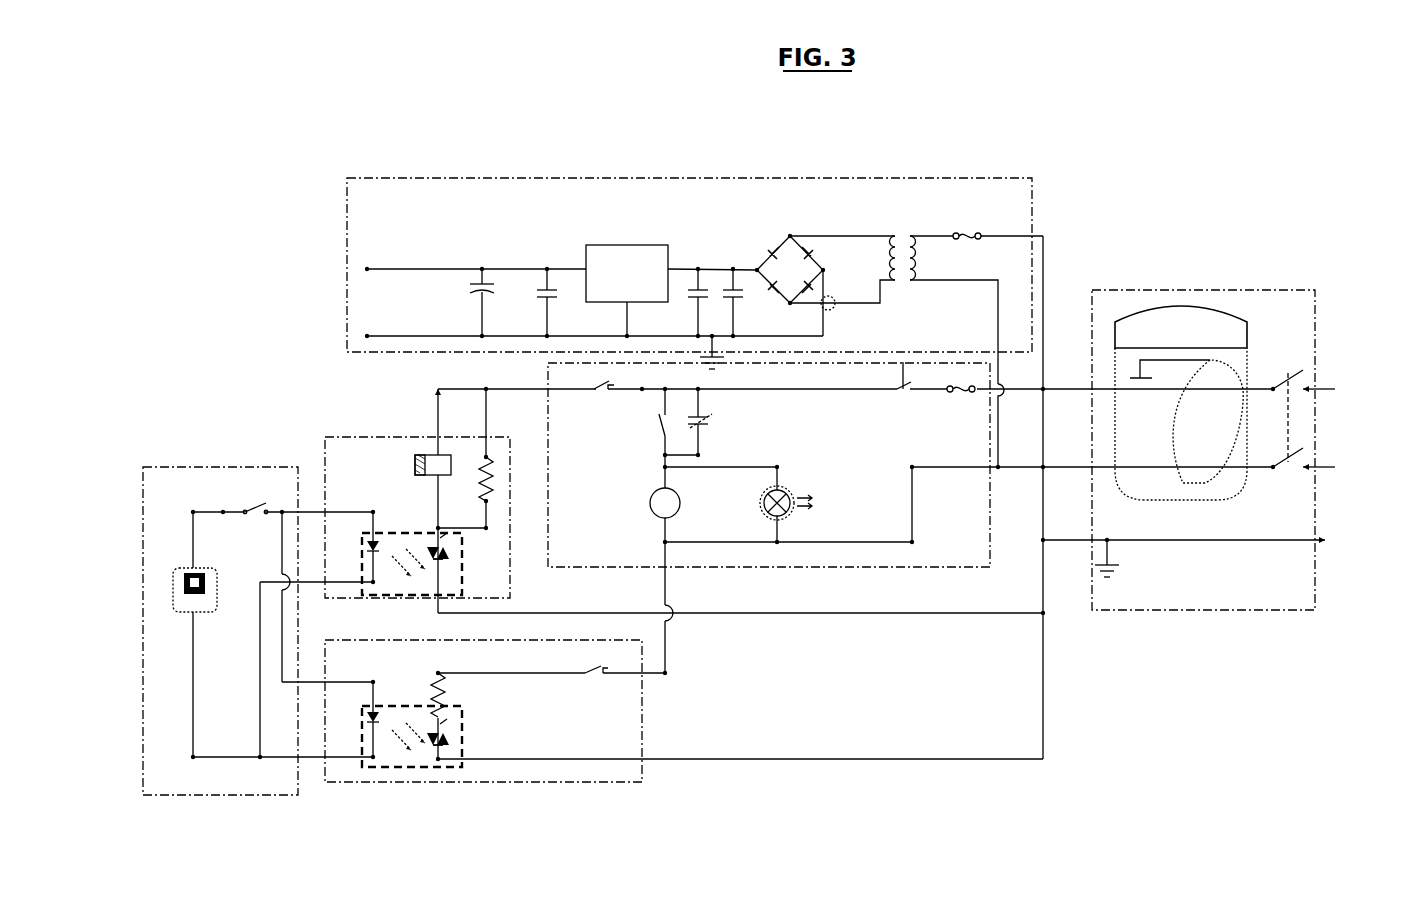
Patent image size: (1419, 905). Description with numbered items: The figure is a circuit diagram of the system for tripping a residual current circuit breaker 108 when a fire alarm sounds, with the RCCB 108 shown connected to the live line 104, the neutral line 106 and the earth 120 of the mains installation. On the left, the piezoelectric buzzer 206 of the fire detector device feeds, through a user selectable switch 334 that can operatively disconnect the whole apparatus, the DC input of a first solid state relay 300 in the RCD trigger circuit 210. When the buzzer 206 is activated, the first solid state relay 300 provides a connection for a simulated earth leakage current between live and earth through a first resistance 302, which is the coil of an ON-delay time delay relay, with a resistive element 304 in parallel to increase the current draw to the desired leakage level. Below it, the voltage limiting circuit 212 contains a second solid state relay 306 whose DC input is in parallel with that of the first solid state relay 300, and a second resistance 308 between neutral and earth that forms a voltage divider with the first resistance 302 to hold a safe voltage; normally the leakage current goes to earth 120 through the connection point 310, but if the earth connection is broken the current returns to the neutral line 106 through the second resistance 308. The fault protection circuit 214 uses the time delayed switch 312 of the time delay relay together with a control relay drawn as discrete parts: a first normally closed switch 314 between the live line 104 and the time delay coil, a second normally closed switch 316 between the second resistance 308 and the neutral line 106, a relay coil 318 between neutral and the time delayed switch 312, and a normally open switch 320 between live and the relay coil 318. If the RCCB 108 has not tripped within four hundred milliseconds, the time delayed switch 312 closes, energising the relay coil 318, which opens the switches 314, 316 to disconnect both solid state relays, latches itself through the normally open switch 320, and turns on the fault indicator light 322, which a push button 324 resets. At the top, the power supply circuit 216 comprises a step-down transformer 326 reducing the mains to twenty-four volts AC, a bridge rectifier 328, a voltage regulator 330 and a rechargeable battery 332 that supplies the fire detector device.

The live line 104 is at (1351, 374).
The neutral line 106 is at (1349, 451).
The residual current circuit breaker 108 is at (1221, 404).
The earth 120 is at (1220, 540).
The piezoelectric buzzer 206 is at (231, 611).
The RCD trigger circuit 210 is at (400, 477).
The voltage limiting circuit 212 is at (684, 746).
The fault protection circuit 214 is at (854, 515).
The power supply circuit 216 is at (688, 257).
The first solid state relay 300 is at (465, 561).
The first resistance 302 is at (420, 455).
The resistive element 304 is at (484, 456).
The second solid state relay 306 is at (418, 768).
The second resistance 308 is at (434, 675).
The connection point 310 is at (1045, 615).
The time delayed switch 312 is at (708, 420).
The first normally closed switch 314 is at (592, 390).
The second normally closed switch 316 is at (597, 677).
The relay coil 318 is at (650, 498).
The normally open switch 320 is at (664, 429).
The light 322 is at (787, 512).
The push button 324 is at (901, 392).
The step-down transformer 326 is at (907, 236).
The bridge rectifier 328 is at (780, 258).
The voltage regulator 330 is at (590, 245).
The rechargeable battery 332 is at (482, 284).
The user selectable switch 334 is at (262, 507).